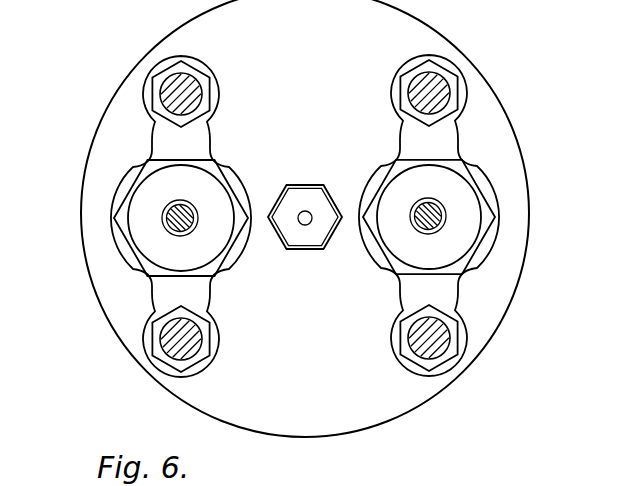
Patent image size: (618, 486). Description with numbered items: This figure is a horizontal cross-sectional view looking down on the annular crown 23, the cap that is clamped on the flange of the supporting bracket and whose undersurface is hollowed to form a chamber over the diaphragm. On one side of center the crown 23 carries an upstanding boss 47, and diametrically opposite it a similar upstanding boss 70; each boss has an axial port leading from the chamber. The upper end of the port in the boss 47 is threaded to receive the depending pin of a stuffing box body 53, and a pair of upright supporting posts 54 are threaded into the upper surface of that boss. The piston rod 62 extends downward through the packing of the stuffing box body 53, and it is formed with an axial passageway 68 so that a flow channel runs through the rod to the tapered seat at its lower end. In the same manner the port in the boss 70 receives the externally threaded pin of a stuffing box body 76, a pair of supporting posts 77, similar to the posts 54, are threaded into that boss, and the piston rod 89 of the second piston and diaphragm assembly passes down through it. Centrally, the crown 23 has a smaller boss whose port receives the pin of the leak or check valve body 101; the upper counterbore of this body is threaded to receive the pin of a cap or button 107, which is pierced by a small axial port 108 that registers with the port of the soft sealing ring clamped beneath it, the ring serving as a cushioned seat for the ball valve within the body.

The annular crown 23 is at (305, 218).
The upstanding boss 47 is at (123, 253).
The stuffing box body 53 is at (122, 216).
The supporting posts 54 is at (172, 77).
The piston rod 62 is at (171, 229).
The axial passageway 68 is at (180, 218).
The upstanding boss 70 is at (480, 256).
The stuffing box body 76 is at (493, 218).
The supporting posts 77 is at (433, 80).
The piston rod 89 is at (418, 230).
The leak or check valve body 101 is at (322, 165).
The cap or button 107 is at (304, 210).
The axial port 108 is at (300, 222).